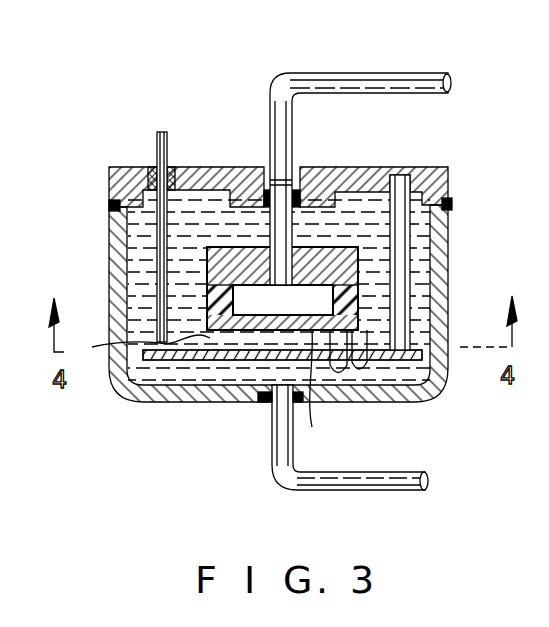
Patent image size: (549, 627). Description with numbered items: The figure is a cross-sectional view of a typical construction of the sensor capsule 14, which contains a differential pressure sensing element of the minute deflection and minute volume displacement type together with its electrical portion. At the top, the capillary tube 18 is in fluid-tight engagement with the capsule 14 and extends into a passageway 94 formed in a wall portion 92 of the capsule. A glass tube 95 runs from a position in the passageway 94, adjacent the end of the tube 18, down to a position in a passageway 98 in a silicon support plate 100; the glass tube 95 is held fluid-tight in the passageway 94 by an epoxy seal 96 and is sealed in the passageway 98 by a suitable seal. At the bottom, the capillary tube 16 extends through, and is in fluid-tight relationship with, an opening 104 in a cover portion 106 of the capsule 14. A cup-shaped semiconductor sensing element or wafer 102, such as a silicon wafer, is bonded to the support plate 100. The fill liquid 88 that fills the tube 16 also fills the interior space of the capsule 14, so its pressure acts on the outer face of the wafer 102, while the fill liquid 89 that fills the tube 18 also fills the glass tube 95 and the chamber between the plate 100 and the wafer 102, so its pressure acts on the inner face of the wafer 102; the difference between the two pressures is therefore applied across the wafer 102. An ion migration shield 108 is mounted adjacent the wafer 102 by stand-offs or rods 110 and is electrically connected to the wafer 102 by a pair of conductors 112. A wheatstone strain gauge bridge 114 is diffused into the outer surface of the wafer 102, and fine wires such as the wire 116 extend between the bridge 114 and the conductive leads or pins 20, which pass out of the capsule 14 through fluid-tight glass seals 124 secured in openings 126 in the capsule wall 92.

The sensor capsule 14 is at (476, 282).
The capillary tube 16 is at (322, 457).
The capillary tube 18 is at (405, 78).
The conductive leads or pins 20 is at (157, 140).
The fill liquid 88 is at (147, 298).
The fill liquid 89 is at (358, 325).
The wall portion 92 is at (450, 182).
The passageway 94 is at (345, 160).
The glass tube 95 is at (283, 200).
The epoxy seal 96 is at (300, 200).
The passageway 98 is at (257, 247).
The silicon support plate 100 is at (350, 278).
The semiconductor sensing element or wafer 102 is at (321, 302).
The opening 104 is at (264, 400).
The cover portion 106 is at (118, 273).
The ion migration shield 108 is at (222, 362).
The stand-offs or rods 110 is at (403, 308).
The conductors 112 is at (360, 370).
The wheatstone strain gauge bridge 114 is at (329, 385).
The fine wire 116 is at (137, 347).
The glass seals 124 is at (172, 167).
The openings 126 is at (173, 168).